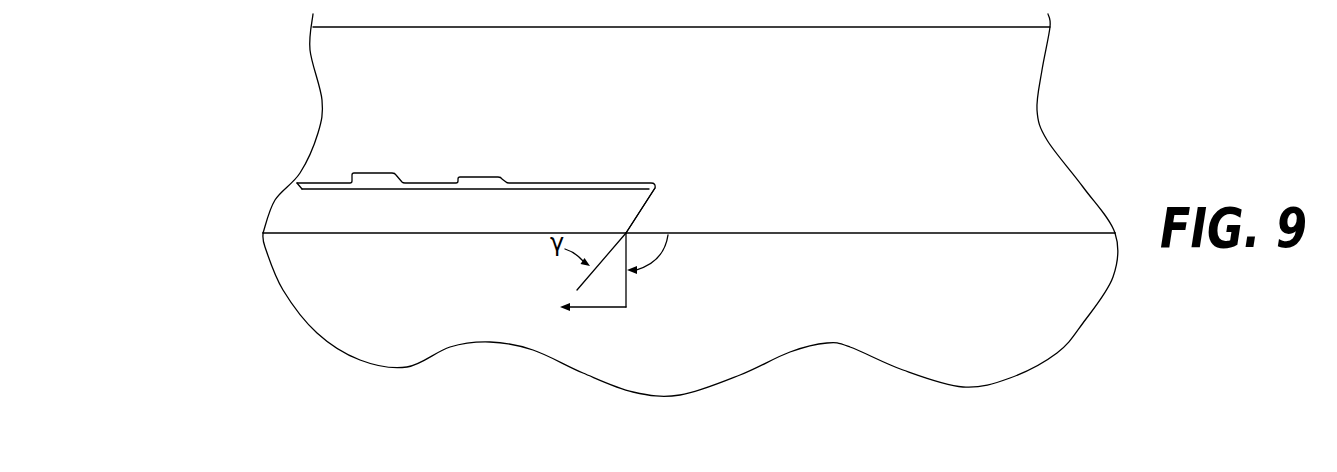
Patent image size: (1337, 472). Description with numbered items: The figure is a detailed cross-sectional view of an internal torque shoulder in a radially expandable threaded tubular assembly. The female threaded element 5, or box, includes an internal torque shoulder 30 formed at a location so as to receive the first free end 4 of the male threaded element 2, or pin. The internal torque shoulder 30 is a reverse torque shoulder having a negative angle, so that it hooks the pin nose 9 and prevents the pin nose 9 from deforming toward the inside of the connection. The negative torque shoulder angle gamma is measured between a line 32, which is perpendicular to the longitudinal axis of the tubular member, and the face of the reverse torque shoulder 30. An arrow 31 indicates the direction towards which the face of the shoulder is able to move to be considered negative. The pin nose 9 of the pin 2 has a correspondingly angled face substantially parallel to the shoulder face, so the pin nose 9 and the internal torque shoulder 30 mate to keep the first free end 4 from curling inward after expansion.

The male threaded element 2 is at (370, 217).
The first free end 4 is at (432, 228).
The female threaded element 5 is at (692, 121).
The pin nose 9 is at (661, 203).
The internal torque shoulder 30 is at (620, 214).
The arrow 31 is at (593, 307).
The line perpendicular to the tubular member longitudinal axis 32 is at (627, 282).